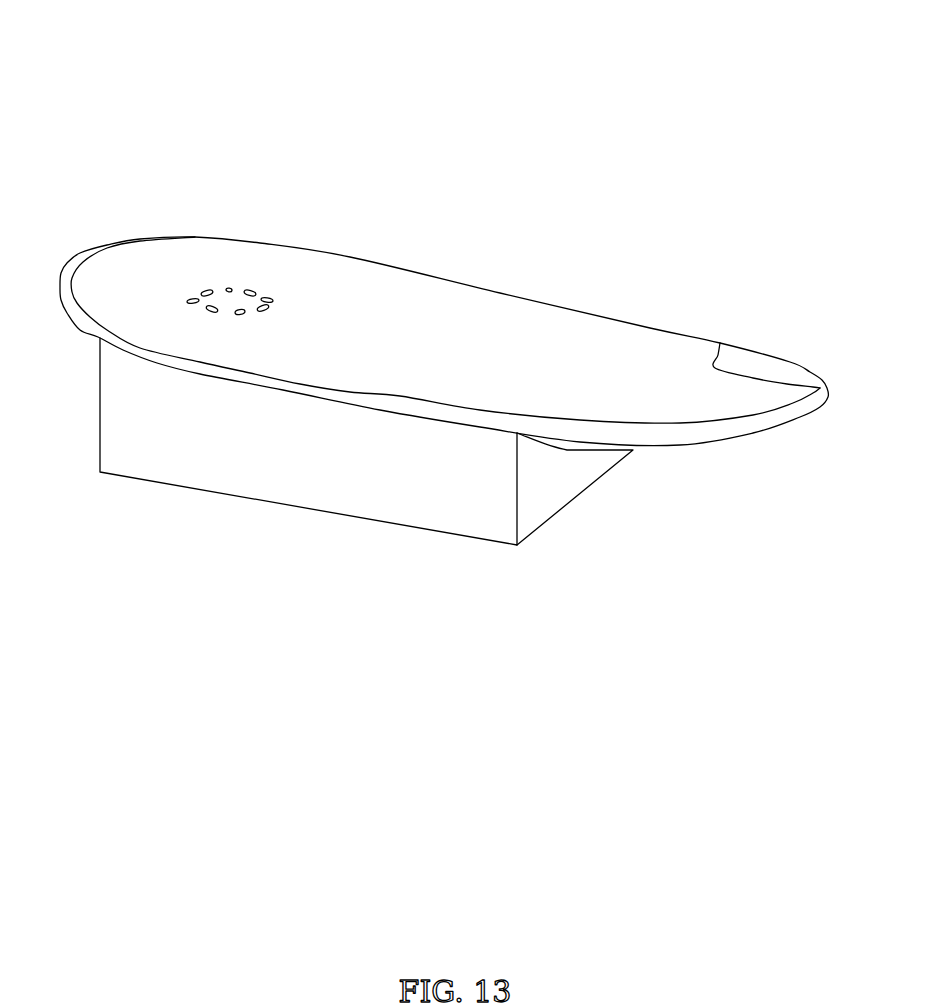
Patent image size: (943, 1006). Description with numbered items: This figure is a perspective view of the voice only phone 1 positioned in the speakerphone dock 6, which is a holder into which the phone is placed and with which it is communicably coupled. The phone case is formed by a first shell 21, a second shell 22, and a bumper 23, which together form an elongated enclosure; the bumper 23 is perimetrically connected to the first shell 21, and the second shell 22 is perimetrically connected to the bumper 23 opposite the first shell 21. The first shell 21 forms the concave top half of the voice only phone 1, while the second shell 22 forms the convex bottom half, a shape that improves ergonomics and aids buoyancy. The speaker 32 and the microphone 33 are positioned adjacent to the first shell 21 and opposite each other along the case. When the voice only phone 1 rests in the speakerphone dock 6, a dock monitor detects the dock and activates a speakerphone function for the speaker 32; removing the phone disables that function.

The voice only phone 1 is at (494, 38).
The speakerphone dock 6 is at (193, 477).
The first shell 21 is at (580, 324).
The second shell 22 is at (573, 447).
The bumper 23 is at (737, 433).
The speaker 32 is at (227, 289).
The microphone 33 is at (765, 363).